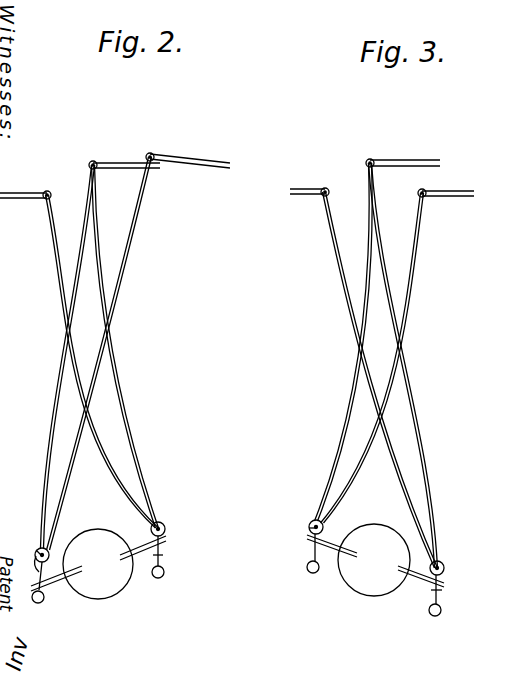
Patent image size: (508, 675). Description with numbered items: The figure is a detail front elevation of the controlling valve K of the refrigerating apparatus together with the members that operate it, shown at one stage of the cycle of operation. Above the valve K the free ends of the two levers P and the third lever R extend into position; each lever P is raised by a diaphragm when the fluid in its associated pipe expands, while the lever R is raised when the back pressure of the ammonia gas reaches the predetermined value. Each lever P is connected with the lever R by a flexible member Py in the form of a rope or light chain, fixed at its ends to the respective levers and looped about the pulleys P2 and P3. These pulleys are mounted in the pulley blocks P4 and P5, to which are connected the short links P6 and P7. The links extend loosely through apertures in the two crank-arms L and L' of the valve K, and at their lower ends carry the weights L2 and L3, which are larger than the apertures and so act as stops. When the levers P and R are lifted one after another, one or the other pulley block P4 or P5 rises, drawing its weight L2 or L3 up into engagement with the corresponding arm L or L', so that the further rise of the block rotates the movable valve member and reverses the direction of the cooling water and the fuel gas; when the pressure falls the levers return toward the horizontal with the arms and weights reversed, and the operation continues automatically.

In FIG. 2, the lever P is at (19, 191).
In FIG. 3, the lever P is at (300, 189).
In FIG. 2, the third lever R is at (115, 160).
In FIG. 3, the third lever R is at (407, 158).
In FIG. 2, the flexible member Py is at (143, 265).
In FIG. 3, the flexible member Py is at (432, 296).
In FIG. 2, the pulley P2 is at (39, 548).
In FIG. 3, the pulley P2 is at (313, 520).
In FIG. 2, the pulley P3 is at (161, 522).
In FIG. 3, the pulley P3 is at (442, 552).
In FIG. 2, the pulley block P4 is at (36, 549).
In FIG. 3, the pulley block P4 is at (309, 529).
In FIG. 2, the pulley block P5 is at (166, 530).
In FIG. 3, the pulley block P5 is at (444, 568).
In FIG. 2, the short link P6 is at (37, 577).
In FIG. 3, the short link P6 is at (310, 552).
In FIG. 2, the short link P7 is at (163, 555).
In FIG. 3, the short link P7 is at (442, 590).
In FIG. 2, the controlling valve K is at (98, 564).
In FIG. 3, the controlling valve K is at (374, 560).
In FIG. 2, the arm L is at (58, 599).
In FIG. 3, the arm L is at (332, 531).
In FIG. 2, the arm L' is at (143, 569).
In FIG. 3, the arm L' is at (421, 590).
In FIG. 2, the weight L2 is at (42, 603).
In FIG. 3, the weight L2 is at (334, 591).
In FIG. 2, the weight L3 is at (164, 574).
In FIG. 3, the weight L3 is at (439, 615).